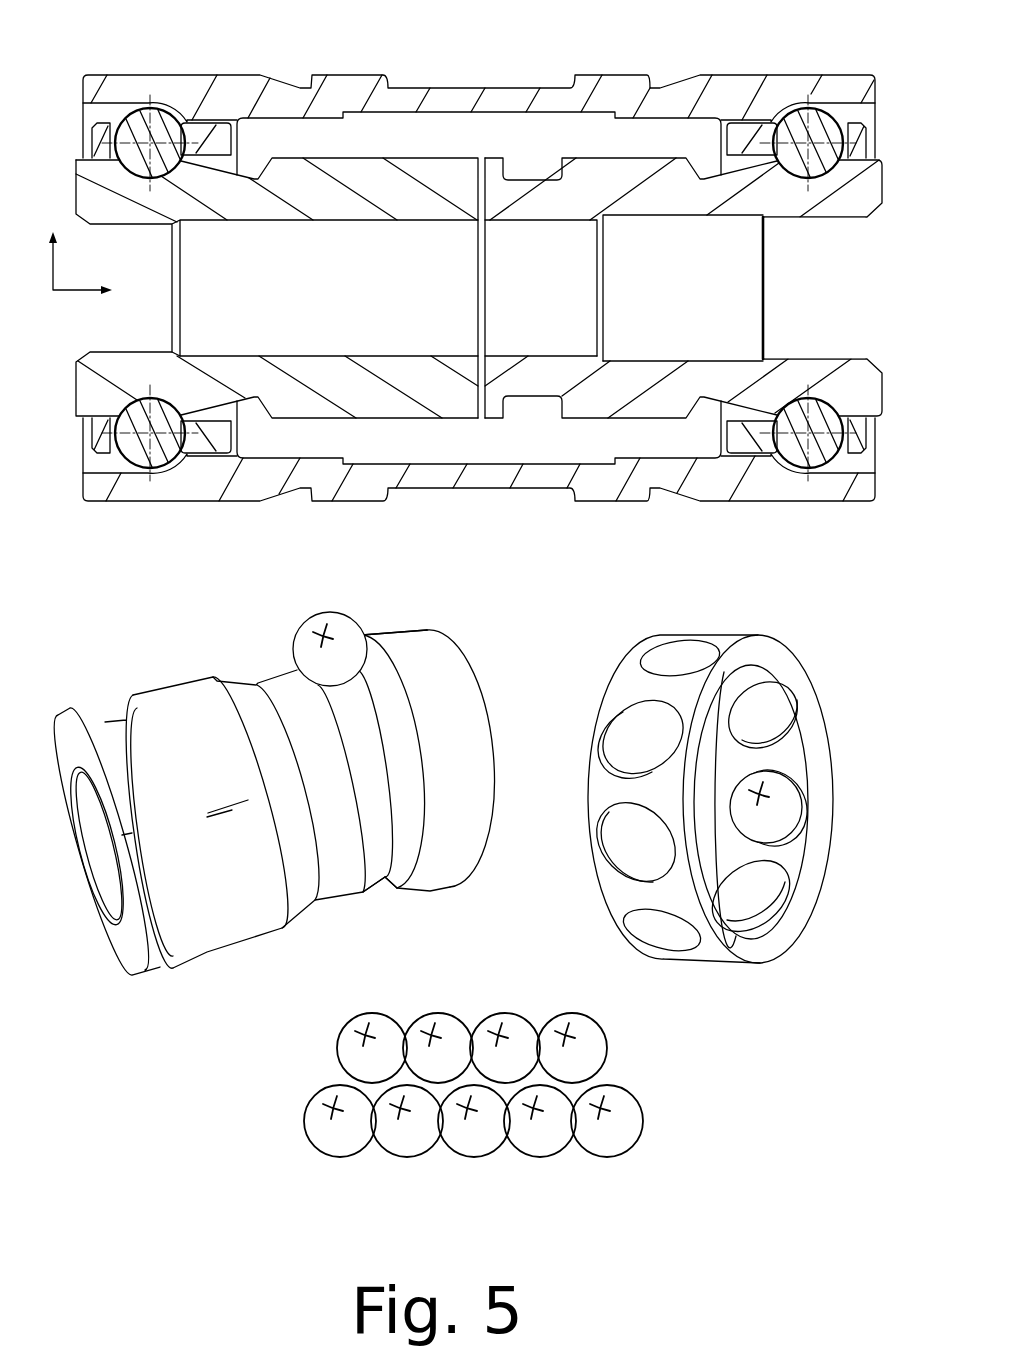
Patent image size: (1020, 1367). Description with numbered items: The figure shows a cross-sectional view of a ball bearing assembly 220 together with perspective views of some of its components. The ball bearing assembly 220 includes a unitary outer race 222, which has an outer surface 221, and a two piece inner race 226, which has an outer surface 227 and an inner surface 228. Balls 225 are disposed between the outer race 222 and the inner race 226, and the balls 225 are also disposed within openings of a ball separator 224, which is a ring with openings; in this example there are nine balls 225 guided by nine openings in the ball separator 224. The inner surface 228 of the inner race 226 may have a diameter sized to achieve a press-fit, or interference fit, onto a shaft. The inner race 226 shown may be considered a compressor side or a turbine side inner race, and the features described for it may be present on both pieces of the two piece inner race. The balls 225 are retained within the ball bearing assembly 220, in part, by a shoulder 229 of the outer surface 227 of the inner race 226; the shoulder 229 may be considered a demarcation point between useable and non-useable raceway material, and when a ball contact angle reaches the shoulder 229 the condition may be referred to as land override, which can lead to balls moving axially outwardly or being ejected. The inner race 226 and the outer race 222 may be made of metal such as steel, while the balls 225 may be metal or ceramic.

The ball bearing assembly 220 is at (203, 29).
The outer surface 221 is at (757, 72).
The outer race 222 is at (751, 107).
The ball separator 224 is at (727, 136).
The balls 225 is at (831, 150).
The inner race 226 is at (690, 167).
The outer surface 227 is at (385, 877).
The inner surface 228 is at (835, 298).
The shoulder 229 is at (386, 668).